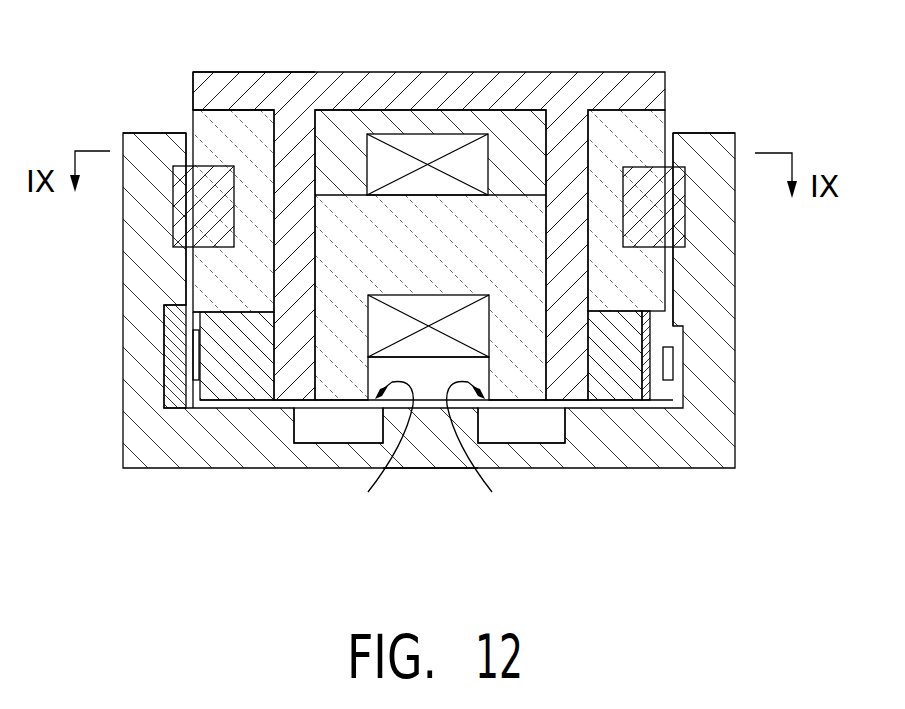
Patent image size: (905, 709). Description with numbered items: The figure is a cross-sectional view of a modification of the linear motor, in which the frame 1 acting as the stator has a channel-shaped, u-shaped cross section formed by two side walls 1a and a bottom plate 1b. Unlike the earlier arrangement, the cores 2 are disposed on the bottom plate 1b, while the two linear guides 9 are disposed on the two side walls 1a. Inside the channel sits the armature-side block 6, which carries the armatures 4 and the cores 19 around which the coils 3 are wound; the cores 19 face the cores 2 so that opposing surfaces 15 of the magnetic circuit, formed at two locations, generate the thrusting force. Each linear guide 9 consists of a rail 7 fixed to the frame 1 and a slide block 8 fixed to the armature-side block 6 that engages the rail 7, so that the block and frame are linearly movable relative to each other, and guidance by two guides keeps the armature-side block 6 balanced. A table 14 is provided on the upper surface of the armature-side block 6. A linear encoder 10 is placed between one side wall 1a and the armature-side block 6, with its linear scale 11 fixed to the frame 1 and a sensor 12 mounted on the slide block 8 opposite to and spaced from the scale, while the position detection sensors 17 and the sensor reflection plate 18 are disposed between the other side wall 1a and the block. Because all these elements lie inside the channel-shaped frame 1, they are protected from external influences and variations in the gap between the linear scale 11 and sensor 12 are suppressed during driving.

The frame 1 is at (419, 310).
The side walls 1a is at (152, 143).
The bottom plate 1b is at (433, 450).
The cores 2 is at (310, 437).
The coils 3 is at (428, 143).
The armatures 4 is at (505, 222).
The armature-side block 6 is at (413, 205).
The rails 7 is at (190, 207).
The slide blocks 8 is at (210, 263).
The linear guides 9 is at (434, 214).
The linear encoder 10 is at (113, 361).
The linear scale 11 is at (173, 382).
The sensor 12 is at (196, 345).
The table 14 is at (220, 87).
The opposing surfaces 15 is at (429, 453).
The position detection sensors 17 is at (668, 362).
The sensor reflection plate 18 is at (645, 390).
The cores 19 is at (430, 211).